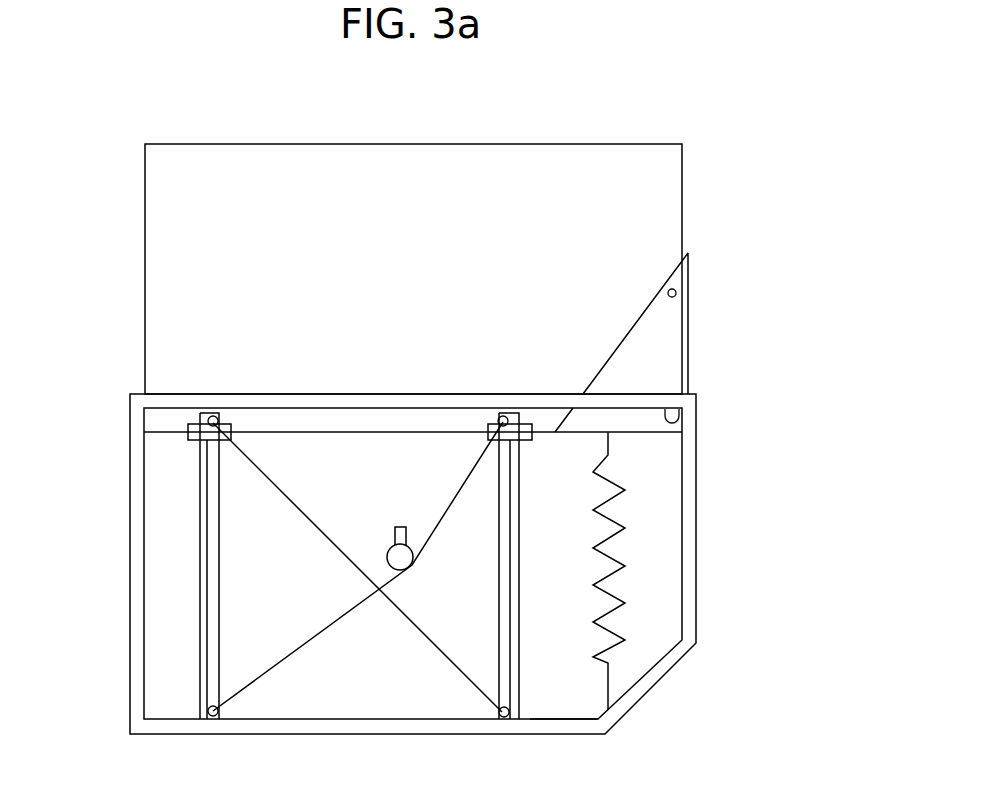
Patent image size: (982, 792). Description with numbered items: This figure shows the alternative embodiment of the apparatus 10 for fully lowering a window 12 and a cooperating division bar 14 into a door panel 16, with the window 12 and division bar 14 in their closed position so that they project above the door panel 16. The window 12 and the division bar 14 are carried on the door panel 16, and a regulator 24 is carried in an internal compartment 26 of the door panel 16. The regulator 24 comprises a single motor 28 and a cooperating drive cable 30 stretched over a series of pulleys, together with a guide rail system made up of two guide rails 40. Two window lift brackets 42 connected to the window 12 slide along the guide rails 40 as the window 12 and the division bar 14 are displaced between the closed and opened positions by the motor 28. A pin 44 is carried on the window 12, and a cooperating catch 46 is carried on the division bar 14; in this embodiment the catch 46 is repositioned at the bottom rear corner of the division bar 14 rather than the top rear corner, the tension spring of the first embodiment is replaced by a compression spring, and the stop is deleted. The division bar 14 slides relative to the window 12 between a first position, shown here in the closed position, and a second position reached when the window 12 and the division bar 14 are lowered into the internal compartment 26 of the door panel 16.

The apparatus 10 is at (630, 108).
The window 12 is at (182, 285).
The division bar 14 is at (655, 343).
The door panel 16 is at (130, 605).
The regulator 24 is at (185, 668).
The internal compartment 26 is at (550, 690).
The motor 28 is at (390, 548).
The drive cable 30 is at (405, 613).
The guide rails 40 is at (218, 563).
The window lift brackets 42 is at (193, 435).
The pin 44 is at (675, 296).
The catch 46 is at (672, 420).